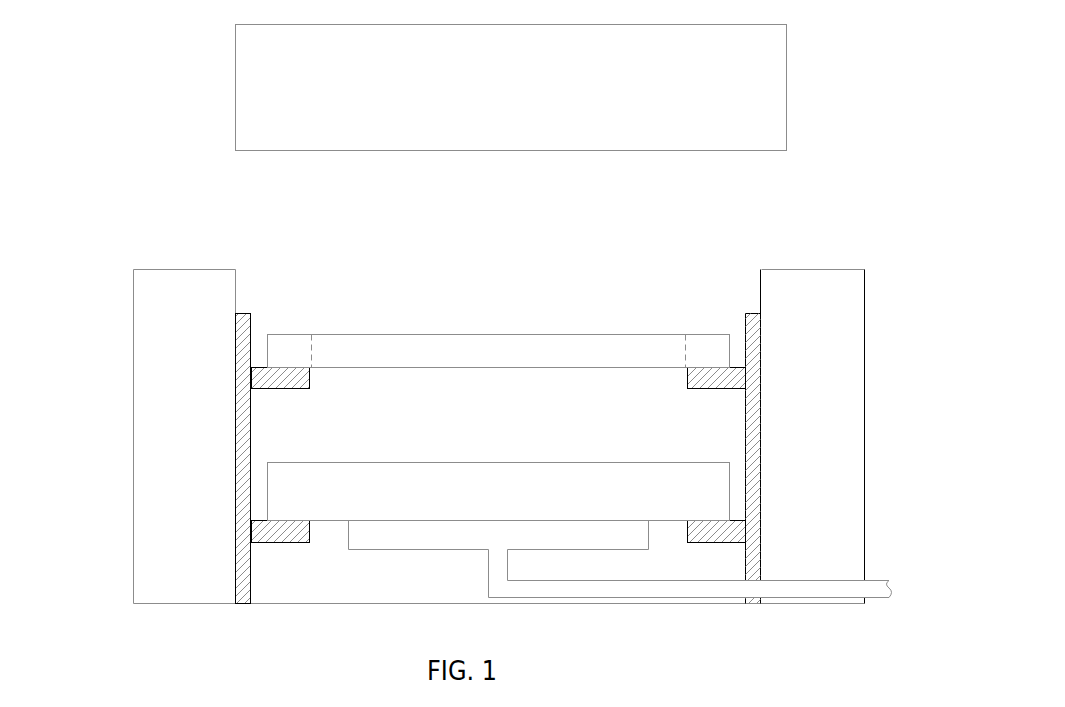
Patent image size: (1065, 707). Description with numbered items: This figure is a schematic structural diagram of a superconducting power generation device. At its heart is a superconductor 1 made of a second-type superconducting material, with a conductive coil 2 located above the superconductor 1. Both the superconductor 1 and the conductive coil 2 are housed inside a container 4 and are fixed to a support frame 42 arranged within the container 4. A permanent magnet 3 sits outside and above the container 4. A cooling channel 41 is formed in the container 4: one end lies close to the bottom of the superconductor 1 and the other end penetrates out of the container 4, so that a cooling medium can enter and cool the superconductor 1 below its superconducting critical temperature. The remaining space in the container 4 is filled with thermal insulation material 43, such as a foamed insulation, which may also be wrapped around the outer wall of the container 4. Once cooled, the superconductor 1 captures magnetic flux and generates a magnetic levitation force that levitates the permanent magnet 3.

The superconductor 1 is at (703, 502).
The conductive coil 2 is at (650, 357).
The permanent magnet 3 is at (748, 103).
The container 4 is at (125, 373).
The cooling channel 41 is at (817, 593).
The support frame 42 is at (235, 477).
The thermal insulation material 43 is at (305, 585).